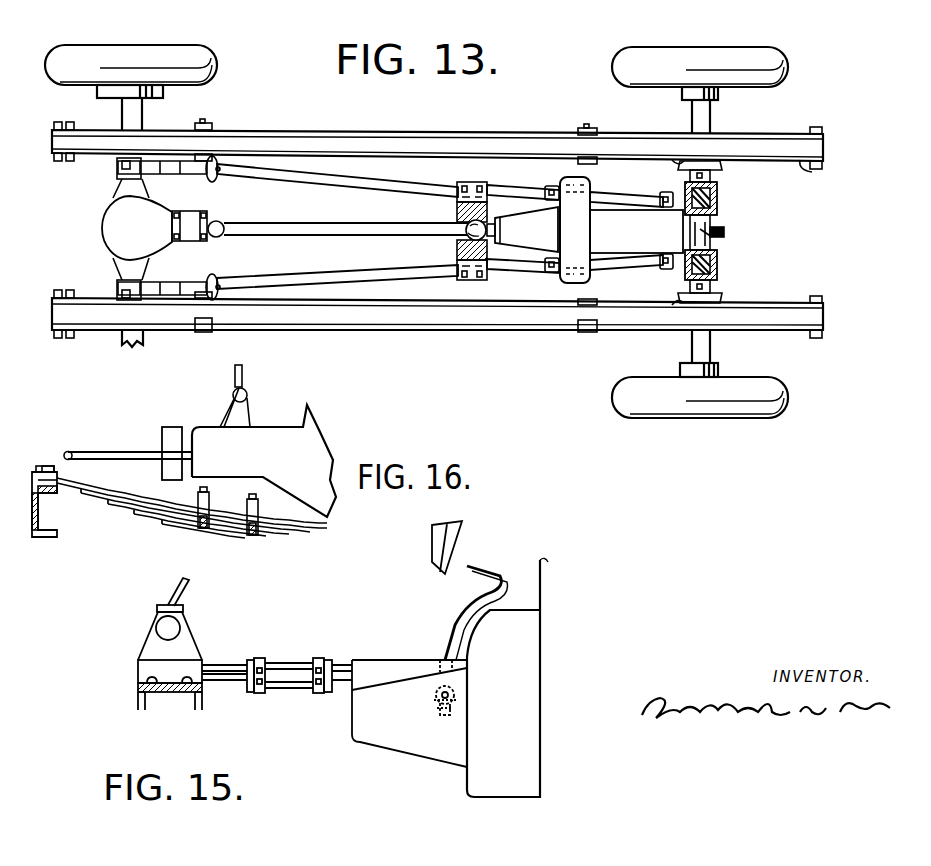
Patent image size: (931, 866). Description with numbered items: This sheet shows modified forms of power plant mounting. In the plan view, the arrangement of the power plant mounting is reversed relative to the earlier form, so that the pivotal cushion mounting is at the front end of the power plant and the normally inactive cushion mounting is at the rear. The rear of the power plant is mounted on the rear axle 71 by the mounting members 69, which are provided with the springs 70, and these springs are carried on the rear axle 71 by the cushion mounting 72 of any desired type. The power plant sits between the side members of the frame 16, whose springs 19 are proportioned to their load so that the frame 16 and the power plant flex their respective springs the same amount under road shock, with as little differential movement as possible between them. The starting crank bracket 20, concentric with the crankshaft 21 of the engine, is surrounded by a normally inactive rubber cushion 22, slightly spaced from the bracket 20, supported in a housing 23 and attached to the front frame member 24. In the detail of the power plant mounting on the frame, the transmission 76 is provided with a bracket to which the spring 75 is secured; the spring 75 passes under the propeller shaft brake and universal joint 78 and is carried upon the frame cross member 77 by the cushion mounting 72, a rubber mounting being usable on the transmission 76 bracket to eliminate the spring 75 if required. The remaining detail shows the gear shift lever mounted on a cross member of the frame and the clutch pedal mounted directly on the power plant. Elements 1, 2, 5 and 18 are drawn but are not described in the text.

In FIG. 13, the gear housing 1 is at (640, 242).
In FIG. 13, the torque tube 2 is at (522, 229).
In FIG. 16, the rod 5 is at (86, 450).
In FIG. 13, the frame 16 is at (281, 135).
In FIG. 13, the axle shaft 18 is at (702, 118).
In FIG. 13, the springs 19 is at (812, 172).
In FIG. 13, the starting crank bracket 20 is at (722, 223).
In FIG. 13, the crankshaft 21 is at (726, 233).
In FIG. 13, the rubber cushion 22 is at (717, 265).
In FIG. 13, the housing 23 is at (716, 190).
In FIG. 13, the front frame member 24 is at (730, 157).
In FIG. 13, the mounting members 69 is at (335, 178).
In FIG. 13, the springs 70 is at (177, 172).
In FIG. 13, the rear axle 71 is at (118, 257).
In FIG. 13, the cushion mounting 72 is at (118, 164).
In FIG. 16, the cushion mounting 72 is at (27, 468).
In FIG. 16, the spring 75 is at (170, 512).
In FIG. 16, the transmission 76 is at (258, 452).
In FIG. 16, the frame cross member 77 is at (43, 538).
In FIG. 16, the propeller shaft brake and universal joint 78 is at (172, 430).